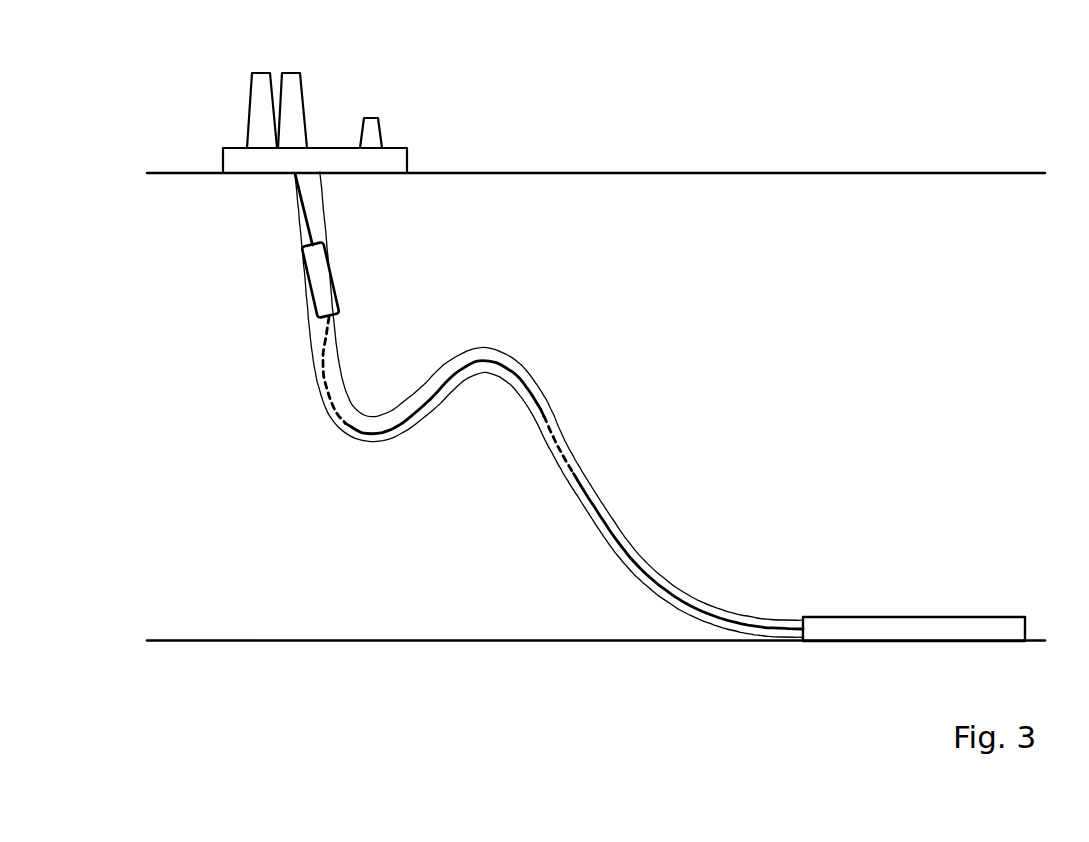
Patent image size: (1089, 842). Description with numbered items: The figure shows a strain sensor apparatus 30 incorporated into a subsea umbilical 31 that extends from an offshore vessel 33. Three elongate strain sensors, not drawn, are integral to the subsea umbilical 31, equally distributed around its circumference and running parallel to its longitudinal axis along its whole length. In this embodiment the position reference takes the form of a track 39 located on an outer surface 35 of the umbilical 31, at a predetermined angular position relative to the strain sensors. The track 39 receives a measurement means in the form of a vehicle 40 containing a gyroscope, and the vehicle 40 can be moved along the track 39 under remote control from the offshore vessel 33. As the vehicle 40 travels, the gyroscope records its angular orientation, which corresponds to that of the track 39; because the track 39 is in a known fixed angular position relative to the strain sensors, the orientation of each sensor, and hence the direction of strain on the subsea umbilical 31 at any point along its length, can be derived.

The offshore vessel 33 is at (297, 95).
The subsea umbilical 31 is at (588, 470).
The outer surface 35 is at (632, 542).
The strain sensor apparatus 30 is at (453, 318).
The vehicle 40 is at (313, 267).
The track 39 is at (460, 363).